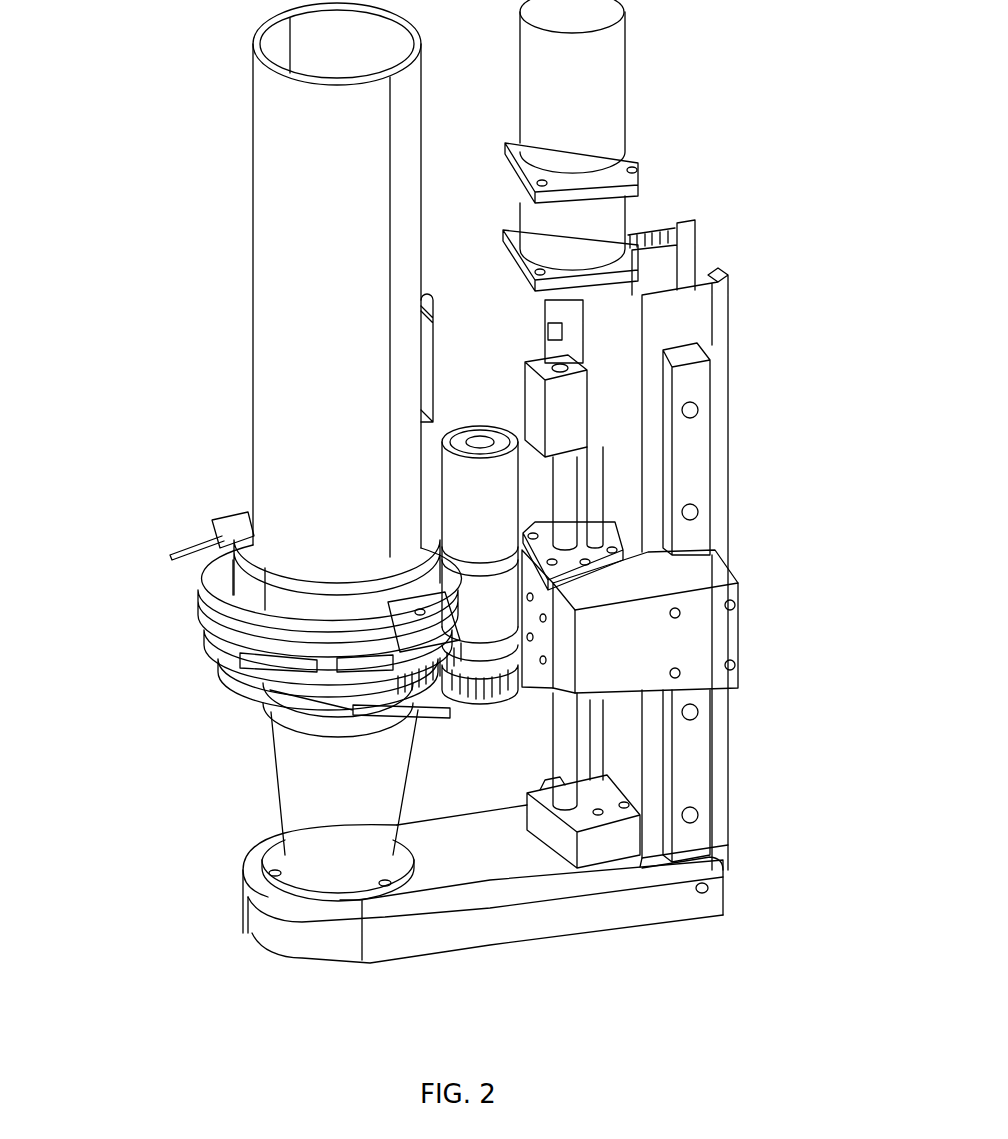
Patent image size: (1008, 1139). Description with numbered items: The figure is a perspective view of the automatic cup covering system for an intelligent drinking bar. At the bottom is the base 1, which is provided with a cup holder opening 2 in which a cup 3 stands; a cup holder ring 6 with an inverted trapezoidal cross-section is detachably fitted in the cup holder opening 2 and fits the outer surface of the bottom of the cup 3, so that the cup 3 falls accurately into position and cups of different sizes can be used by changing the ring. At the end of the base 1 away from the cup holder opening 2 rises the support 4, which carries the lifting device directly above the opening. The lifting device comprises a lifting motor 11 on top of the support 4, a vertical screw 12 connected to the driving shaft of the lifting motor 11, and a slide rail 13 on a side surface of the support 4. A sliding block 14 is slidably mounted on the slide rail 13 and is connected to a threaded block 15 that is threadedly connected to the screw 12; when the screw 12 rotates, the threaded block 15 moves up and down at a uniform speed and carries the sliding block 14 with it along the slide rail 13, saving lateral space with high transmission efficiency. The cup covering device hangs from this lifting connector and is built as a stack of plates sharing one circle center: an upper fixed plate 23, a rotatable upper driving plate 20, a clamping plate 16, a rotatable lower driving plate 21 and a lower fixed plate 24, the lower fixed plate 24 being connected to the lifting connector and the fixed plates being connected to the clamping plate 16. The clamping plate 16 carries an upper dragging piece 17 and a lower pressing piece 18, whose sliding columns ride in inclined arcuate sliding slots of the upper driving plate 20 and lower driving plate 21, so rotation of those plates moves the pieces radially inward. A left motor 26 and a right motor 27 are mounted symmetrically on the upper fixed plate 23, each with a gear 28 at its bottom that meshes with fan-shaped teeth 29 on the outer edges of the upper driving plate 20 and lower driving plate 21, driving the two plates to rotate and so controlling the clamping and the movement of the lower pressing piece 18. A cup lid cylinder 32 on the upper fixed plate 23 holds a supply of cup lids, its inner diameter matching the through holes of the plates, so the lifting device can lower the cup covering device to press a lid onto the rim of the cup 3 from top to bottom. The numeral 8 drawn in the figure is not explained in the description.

The base 1 is at (419, 884).
The cup holder opening 2 is at (258, 870).
The cup 3 is at (340, 849).
The support 4 is at (726, 545).
The cup holder ring 6 is at (246, 831).
The connecting block 8 is at (673, 394).
The lifting motor 11 is at (670, 145).
The screw 12 is at (690, 628).
The slide rail 13 is at (757, 602).
The sliding block 14 is at (686, 621).
The threaded block 15 is at (687, 556).
The clamping plate 16 is at (265, 664).
The upper dragging piece 17 is at (268, 612).
The lower pressing piece 18 is at (198, 678).
The upper driving plate 20 is at (148, 529).
The lower driving plate 21 is at (239, 705).
The upper fixed plate 23 is at (267, 516).
The lower fixed plate 24 is at (300, 724).
The left motor 26 is at (253, 358).
The right motor 27 is at (295, 509).
The gear 28 is at (553, 840).
The teeth 29 is at (467, 803).
The cup lid cylinder 32 is at (247, 280).